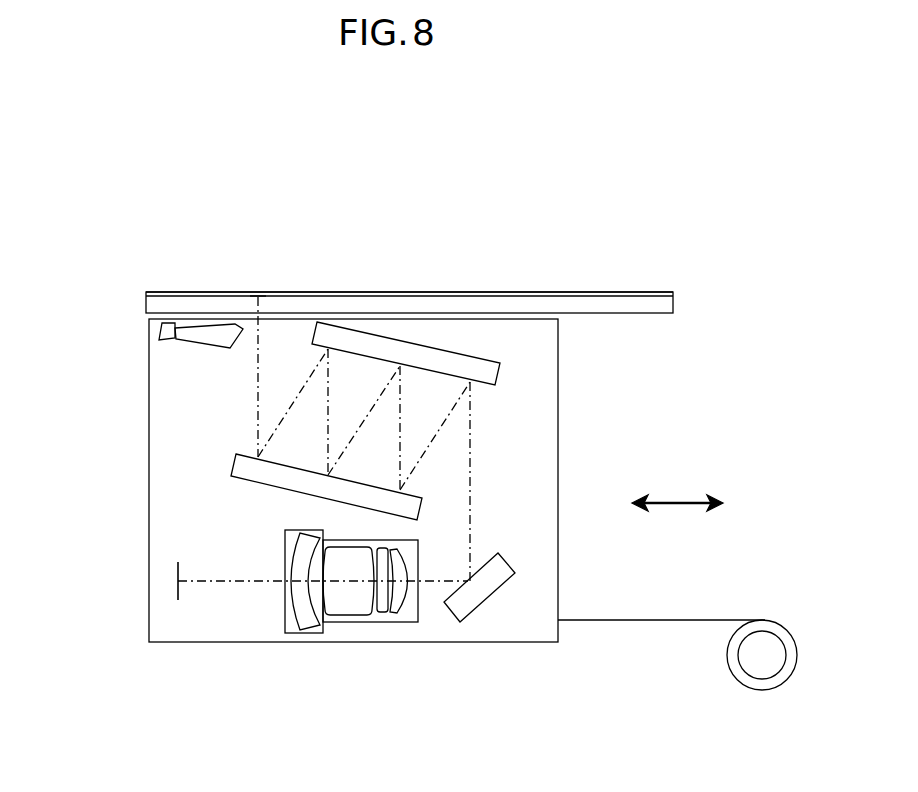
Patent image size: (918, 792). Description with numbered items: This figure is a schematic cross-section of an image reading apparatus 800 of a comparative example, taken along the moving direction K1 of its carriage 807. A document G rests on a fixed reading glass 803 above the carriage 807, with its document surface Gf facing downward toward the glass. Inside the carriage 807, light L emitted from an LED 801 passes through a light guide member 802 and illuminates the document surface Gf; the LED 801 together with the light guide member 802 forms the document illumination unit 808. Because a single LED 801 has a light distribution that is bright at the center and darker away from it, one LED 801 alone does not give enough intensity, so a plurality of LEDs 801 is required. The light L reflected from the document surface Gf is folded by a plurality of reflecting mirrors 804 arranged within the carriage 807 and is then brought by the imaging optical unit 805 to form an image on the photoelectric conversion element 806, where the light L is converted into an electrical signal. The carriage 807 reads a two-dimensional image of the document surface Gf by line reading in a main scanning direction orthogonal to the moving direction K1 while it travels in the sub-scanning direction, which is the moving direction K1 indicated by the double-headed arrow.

The image reading apparatus 800 is at (475, 258).
The LED 801 is at (163, 342).
The light guide member 802 is at (200, 348).
The fixed reading glass 803 is at (607, 305).
The reflecting mirrors 804 is at (497, 378).
The imaging optical unit 805 is at (352, 622).
The photoelectric conversion element 806 is at (177, 592).
The carriage 807 is at (562, 430).
The document illumination unit 808 is at (92, 353).
The document G is at (312, 292).
The document surface Gf is at (262, 298).
The light L is at (258, 400).
The moving direction K1 is at (677, 494).